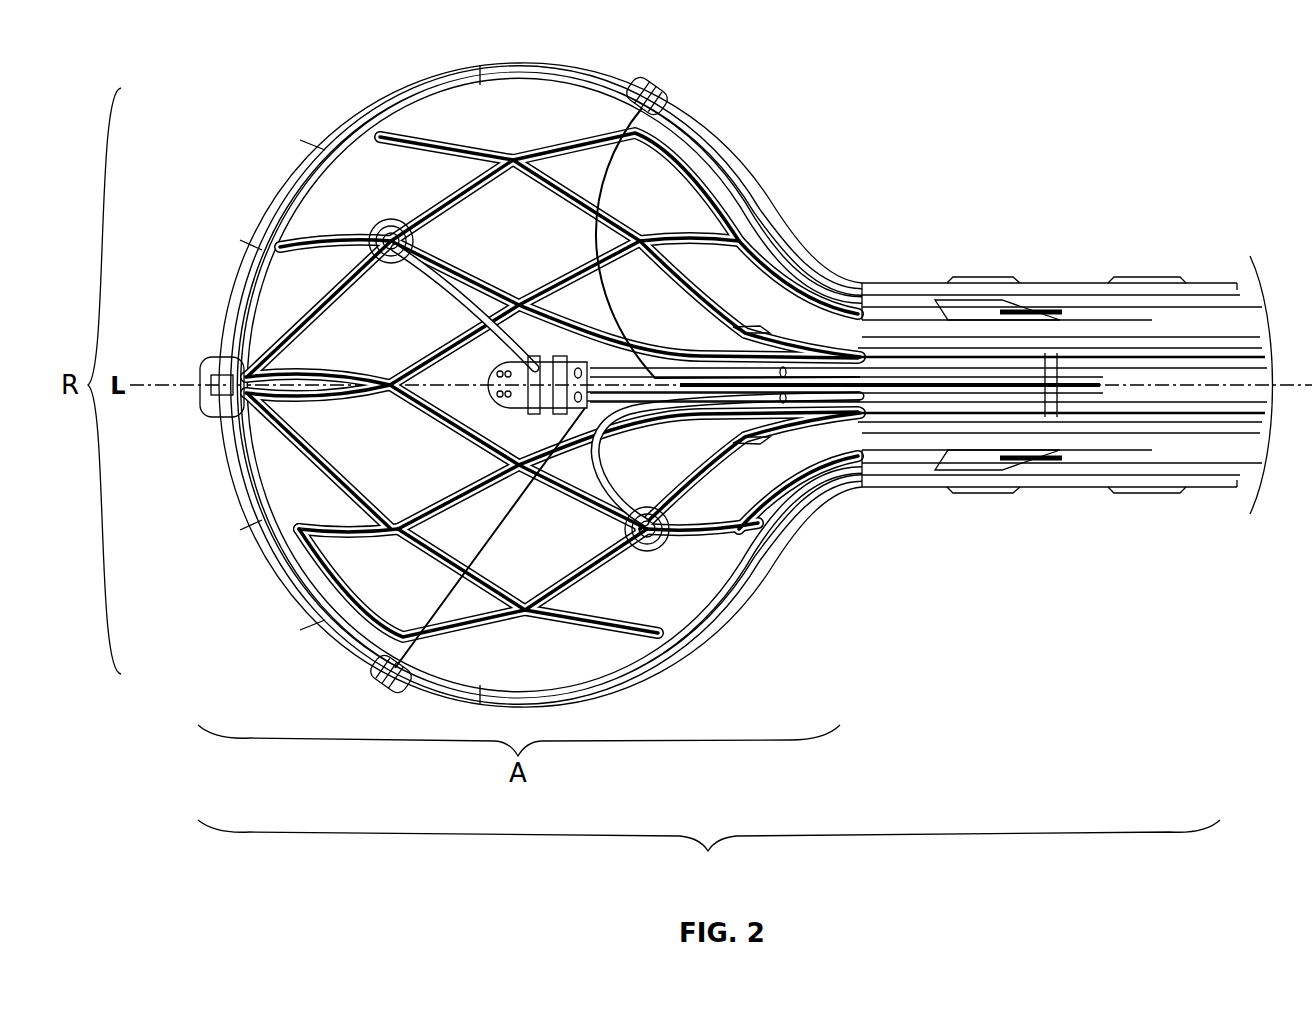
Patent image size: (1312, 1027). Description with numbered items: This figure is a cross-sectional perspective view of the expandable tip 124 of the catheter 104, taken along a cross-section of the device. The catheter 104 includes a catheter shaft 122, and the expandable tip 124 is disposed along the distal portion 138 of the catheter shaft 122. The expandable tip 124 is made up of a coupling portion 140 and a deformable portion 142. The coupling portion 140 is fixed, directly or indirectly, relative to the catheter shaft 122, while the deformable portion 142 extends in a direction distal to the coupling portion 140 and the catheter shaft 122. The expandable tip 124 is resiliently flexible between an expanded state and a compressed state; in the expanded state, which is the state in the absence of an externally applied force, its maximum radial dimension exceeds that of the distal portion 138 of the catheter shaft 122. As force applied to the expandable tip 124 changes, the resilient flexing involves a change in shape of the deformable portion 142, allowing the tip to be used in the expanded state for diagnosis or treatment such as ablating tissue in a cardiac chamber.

The expandable tip 124 is at (422, 54).
The deformable portion 142 is at (334, 138).
The coupling portion 140 is at (852, 293).
The distal portion 138 is at (1074, 208).
The catheter shaft 122 is at (1214, 283).
The catheter 104 is at (709, 853).